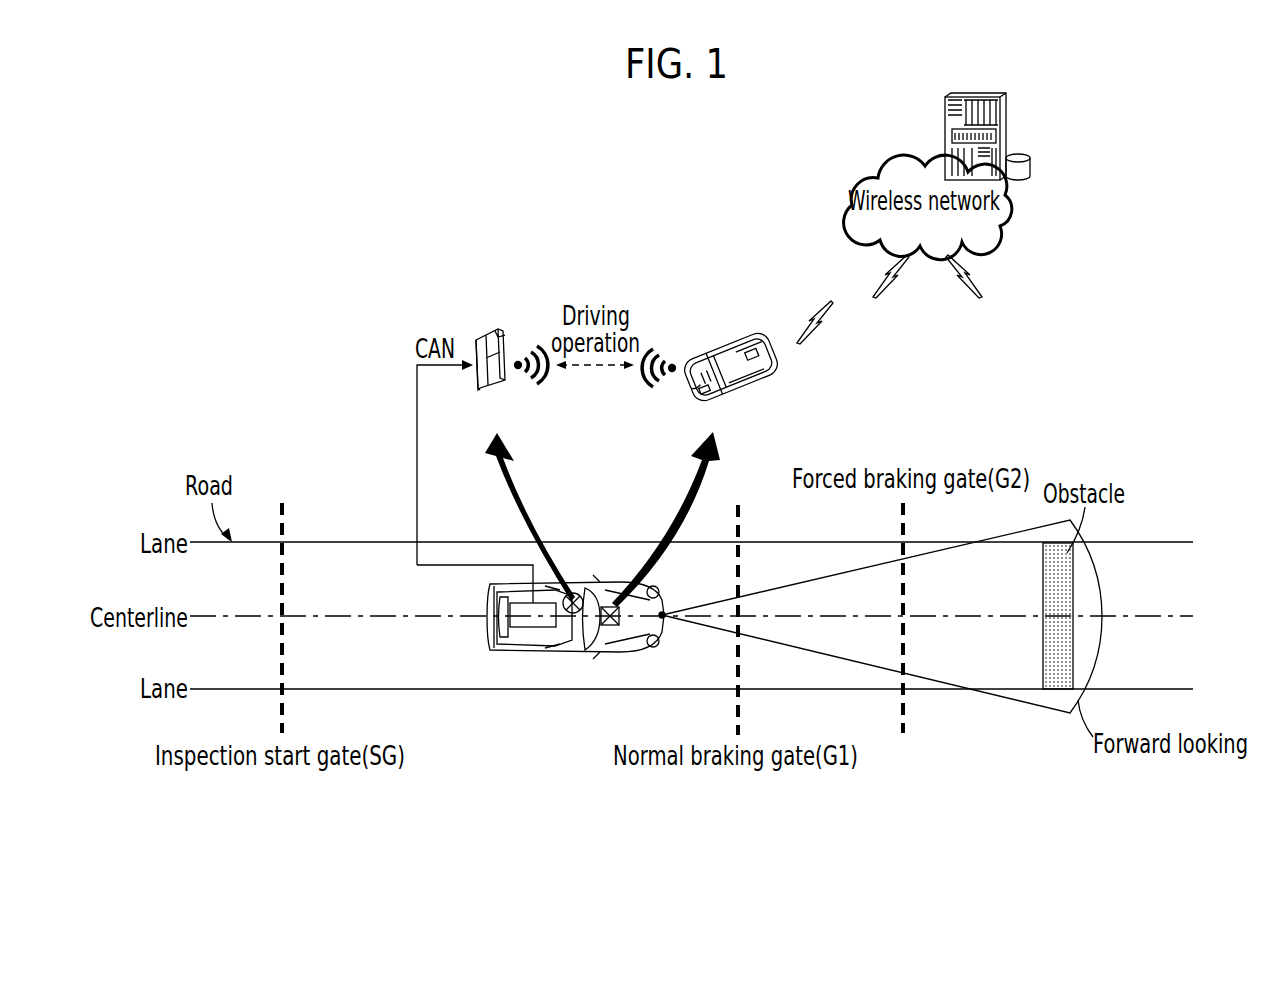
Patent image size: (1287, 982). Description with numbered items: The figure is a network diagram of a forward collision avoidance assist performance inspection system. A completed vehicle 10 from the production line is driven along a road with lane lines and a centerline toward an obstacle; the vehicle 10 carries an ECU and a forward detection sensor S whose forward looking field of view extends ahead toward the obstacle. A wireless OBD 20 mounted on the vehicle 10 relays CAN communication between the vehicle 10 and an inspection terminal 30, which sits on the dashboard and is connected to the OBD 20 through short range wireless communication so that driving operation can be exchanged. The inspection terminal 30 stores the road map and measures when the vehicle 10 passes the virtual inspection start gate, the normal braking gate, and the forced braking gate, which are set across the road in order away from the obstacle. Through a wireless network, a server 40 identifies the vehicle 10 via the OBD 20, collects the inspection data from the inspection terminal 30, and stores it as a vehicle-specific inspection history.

The vehicle 10 is at (488, 610).
The OBD 20 is at (496, 325).
The inspection terminal 30 is at (712, 345).
The server 40 is at (942, 123).
The forward looking sensor S is at (664, 612).